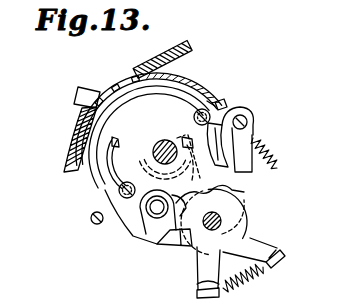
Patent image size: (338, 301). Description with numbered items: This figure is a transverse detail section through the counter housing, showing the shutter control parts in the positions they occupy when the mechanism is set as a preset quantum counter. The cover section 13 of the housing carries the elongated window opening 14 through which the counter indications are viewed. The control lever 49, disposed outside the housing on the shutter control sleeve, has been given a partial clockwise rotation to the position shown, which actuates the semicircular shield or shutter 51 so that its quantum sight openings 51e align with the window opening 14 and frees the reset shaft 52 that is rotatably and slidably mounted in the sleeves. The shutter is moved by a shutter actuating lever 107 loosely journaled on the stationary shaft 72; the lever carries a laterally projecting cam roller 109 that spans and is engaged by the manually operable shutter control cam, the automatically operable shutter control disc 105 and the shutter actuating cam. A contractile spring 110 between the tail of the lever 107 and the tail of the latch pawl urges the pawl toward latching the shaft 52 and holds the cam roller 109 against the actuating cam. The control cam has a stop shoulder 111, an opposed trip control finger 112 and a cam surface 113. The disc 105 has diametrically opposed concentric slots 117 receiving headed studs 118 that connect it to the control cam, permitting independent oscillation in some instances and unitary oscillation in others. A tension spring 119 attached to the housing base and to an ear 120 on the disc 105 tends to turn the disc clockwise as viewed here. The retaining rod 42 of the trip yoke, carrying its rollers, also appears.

The cover section 13 is at (153, 59).
The elongated window opening 14 is at (136, 76).
The retaining rod 42 is at (94, 225).
The control lever 49 is at (80, 95).
The shield or shutter 51 is at (208, 98).
The quantum sight openings 51e is at (123, 89).
The reset shaft 52 is at (171, 141).
The stationary shaft 72 is at (221, 214).
The shutter control disc 105 is at (101, 173).
The shutter actuating lever 107 is at (198, 246).
The cam roller 109 is at (174, 214).
The contractile spring 110 is at (251, 282).
The stop shoulder 111 is at (238, 172).
The trip control finger 112 is at (133, 237).
The cam surface 113 is at (169, 228).
The concentric slots 117 is at (113, 174).
The headed studs 118 is at (211, 110).
The tension spring 119 is at (272, 153).
The ear 120 is at (250, 121).